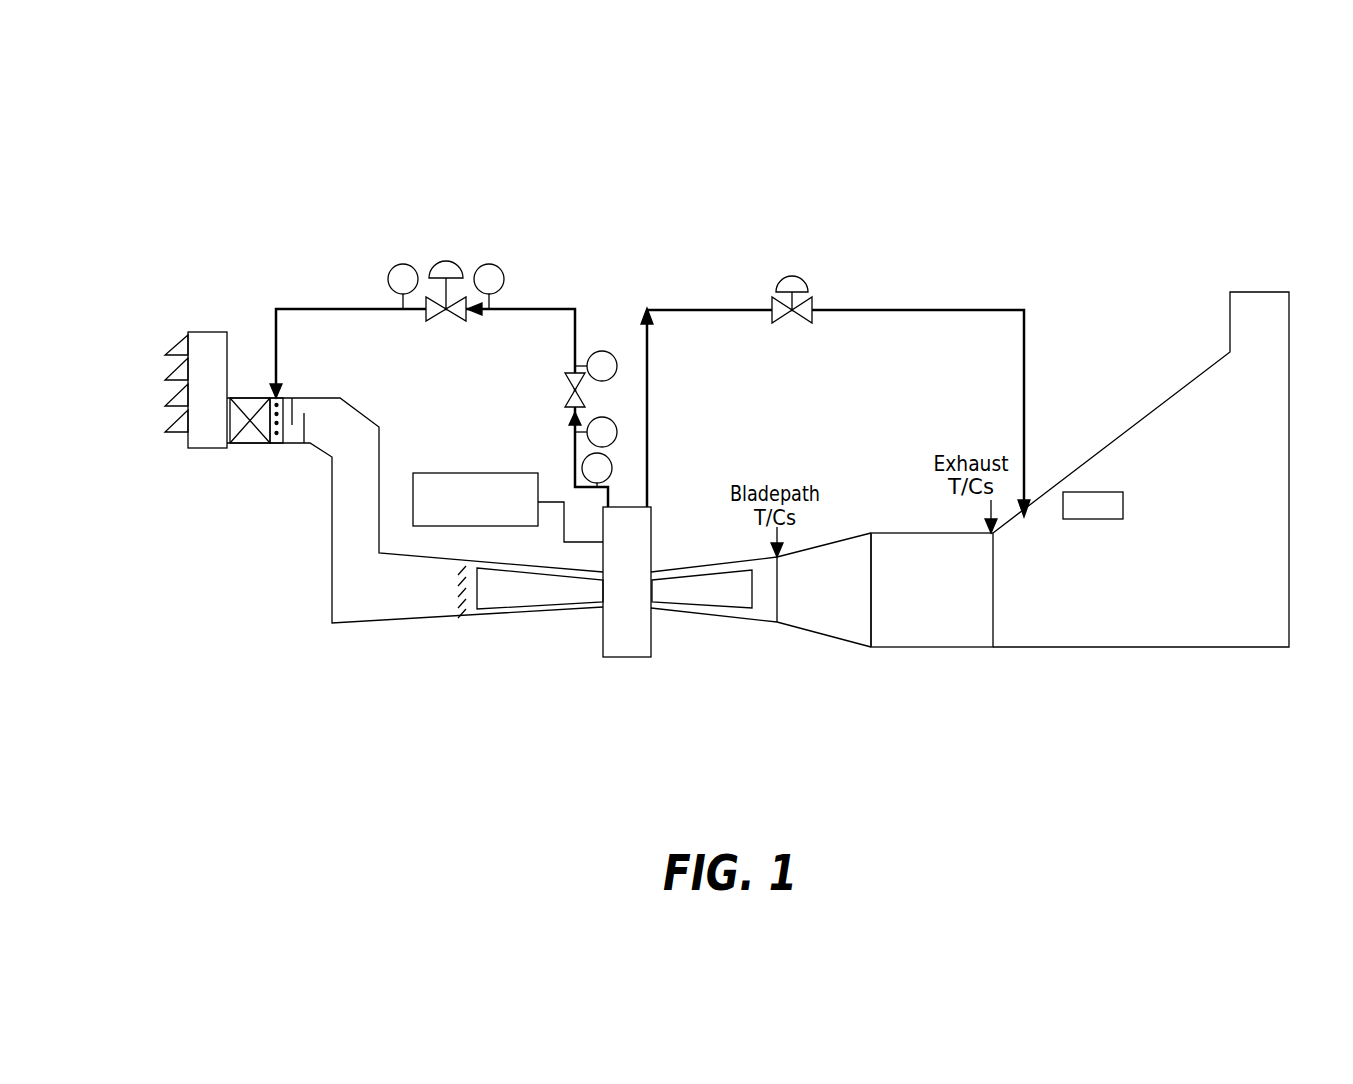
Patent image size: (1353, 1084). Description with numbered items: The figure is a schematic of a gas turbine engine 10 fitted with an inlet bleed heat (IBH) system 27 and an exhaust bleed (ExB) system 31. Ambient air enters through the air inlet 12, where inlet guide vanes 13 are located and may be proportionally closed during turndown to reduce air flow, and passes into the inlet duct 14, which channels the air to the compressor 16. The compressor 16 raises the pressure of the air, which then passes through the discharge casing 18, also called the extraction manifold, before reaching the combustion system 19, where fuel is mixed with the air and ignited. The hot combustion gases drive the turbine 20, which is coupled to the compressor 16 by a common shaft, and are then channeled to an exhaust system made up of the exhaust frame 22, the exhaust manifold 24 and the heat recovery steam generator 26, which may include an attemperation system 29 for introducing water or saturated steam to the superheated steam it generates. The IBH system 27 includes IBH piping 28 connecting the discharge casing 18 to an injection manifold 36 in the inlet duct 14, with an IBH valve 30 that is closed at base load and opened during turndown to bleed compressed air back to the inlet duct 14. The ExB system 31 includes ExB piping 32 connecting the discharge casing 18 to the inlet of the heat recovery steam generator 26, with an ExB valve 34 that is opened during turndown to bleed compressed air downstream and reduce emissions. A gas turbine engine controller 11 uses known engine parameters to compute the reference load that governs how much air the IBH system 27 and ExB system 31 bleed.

The gas turbine engine 10 is at (1002, 159).
The gas turbine engine controller 11 is at (455, 473).
The air inlet 12 is at (203, 448).
The inlet guide vanes 13 is at (170, 372).
The inlet duct 14 is at (362, 623).
The compressor 16 is at (527, 610).
The discharge casing 18 is at (632, 657).
The combustion system 19 is at (667, 637).
The turbine 20 is at (737, 608).
The exhaust frame 22 is at (847, 647).
The exhaust manifold 24 is at (935, 647).
The heat recovery steam generator 26 is at (1131, 647).
The inlet bleed heat system 27 is at (518, 210).
The IBH piping 28 is at (333, 309).
The attemperation system 29 is at (1092, 492).
The IBH valve 30 is at (445, 318).
The exhaust bleed system 31 is at (823, 212).
The ExB piping 32 is at (692, 310).
The ExB valve 34 is at (789, 323).
The injection manifold 36 is at (277, 443).